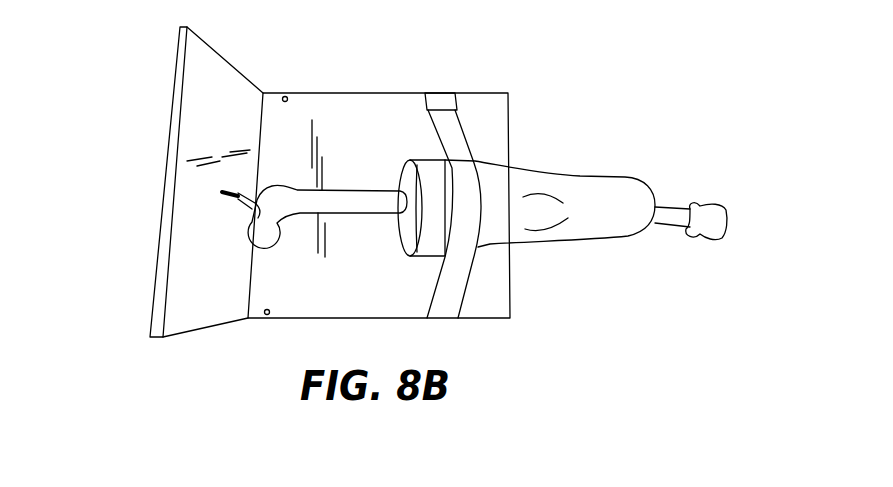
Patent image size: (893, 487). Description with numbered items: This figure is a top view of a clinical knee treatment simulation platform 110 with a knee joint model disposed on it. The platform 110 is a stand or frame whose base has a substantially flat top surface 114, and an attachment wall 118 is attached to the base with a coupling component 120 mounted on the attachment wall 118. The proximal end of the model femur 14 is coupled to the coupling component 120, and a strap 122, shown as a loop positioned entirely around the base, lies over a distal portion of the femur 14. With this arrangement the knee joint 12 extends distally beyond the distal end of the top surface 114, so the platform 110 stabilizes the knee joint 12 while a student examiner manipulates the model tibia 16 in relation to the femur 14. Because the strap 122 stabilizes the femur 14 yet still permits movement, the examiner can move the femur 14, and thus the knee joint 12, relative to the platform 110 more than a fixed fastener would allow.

The knee joint 12 is at (530, 153).
The model femur 14 is at (346, 200).
The model tibia 16 is at (666, 211).
The platform 110 is at (201, 331).
The top surface 114 is at (325, 297).
The attachment wall 118 is at (187, 193).
The coupling component 120 is at (234, 190).
The strap 122 is at (455, 277).